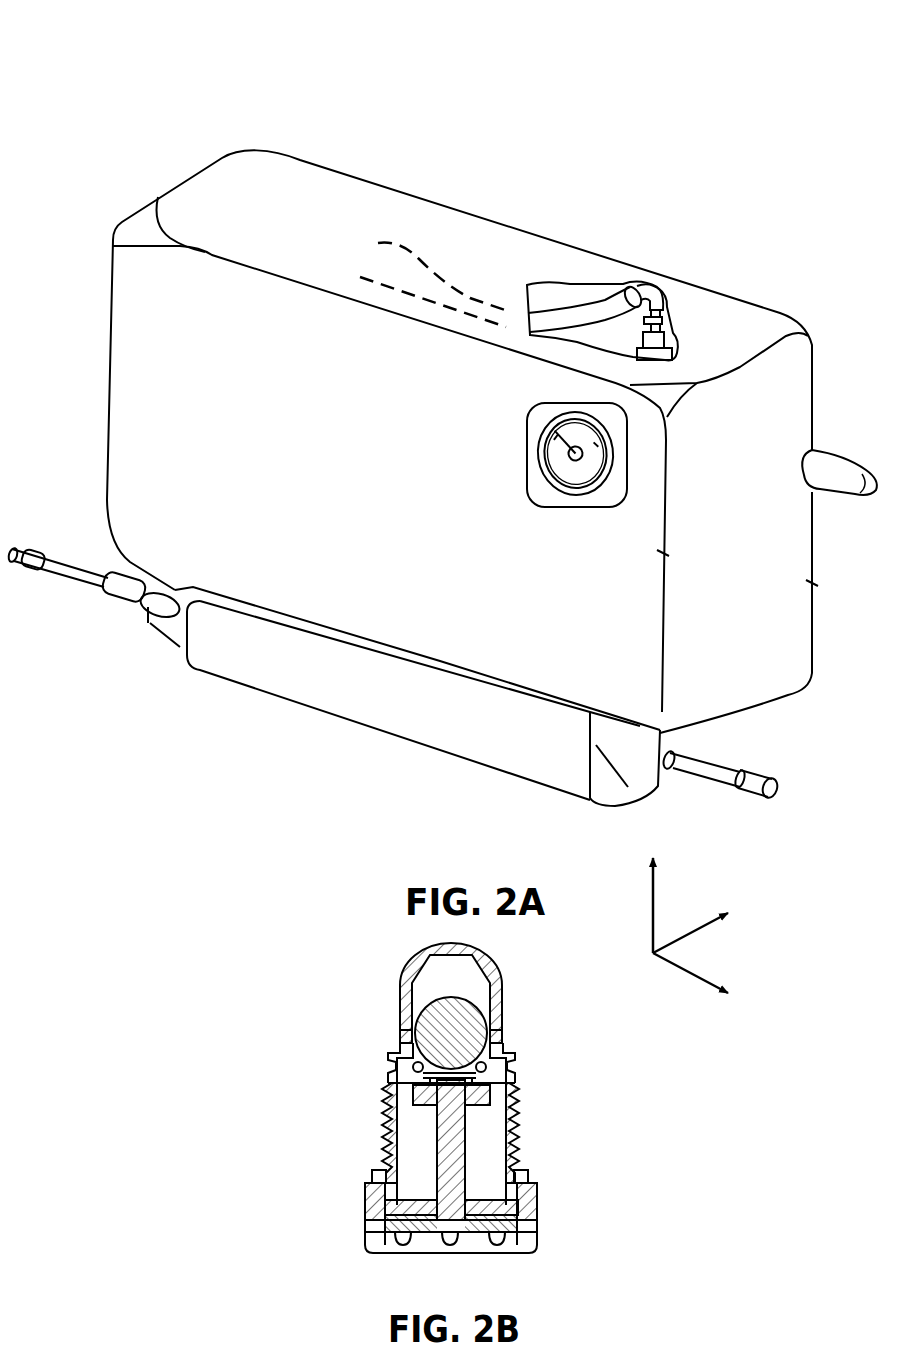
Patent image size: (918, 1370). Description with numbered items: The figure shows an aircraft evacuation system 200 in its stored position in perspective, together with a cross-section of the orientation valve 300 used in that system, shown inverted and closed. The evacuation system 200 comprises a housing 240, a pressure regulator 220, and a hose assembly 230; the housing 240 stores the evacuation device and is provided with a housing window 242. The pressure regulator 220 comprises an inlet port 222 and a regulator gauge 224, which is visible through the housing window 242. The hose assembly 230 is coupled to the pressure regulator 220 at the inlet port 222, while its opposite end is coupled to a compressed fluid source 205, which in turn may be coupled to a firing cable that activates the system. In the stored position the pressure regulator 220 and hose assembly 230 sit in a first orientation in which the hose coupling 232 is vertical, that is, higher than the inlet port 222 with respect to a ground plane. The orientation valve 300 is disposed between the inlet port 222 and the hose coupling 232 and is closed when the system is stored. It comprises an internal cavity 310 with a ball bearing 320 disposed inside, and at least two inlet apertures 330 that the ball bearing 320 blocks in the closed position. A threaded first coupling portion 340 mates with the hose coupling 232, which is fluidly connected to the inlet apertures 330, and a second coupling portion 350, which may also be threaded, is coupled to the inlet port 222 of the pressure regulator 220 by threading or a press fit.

In FIG. 2A, the evacuation system 200 is at (150, 116).
In FIG. 2A, the compressed fluid source 205 is at (400, 278).
In FIG. 2A, the pressure regulator 220 is at (536, 484).
In FIG. 2A, the inlet port 222 is at (663, 307).
In FIG. 2A, the regulator gauge 224 is at (540, 436).
In FIG. 2A, the hose assembly 230 is at (583, 318).
In FIG. 2A, the hose coupling 232 is at (634, 298).
In FIG. 2A, the housing 240 is at (260, 411).
In FIG. 2A, the housing window 242 is at (527, 426).
In FIG. 2B, the orientation valve 300 is at (240, 1000).
In FIG. 2B, the internal cavity 310 is at (440, 982).
In FIG. 2B, the ball bearing 320 is at (440, 1037).
In FIG. 2B, the inlet apertures 330 is at (400, 1040).
In FIG. 2B, the first coupling portion 340 is at (383, 1135).
In FIG. 2B, the second coupling portion 350 is at (378, 1202).